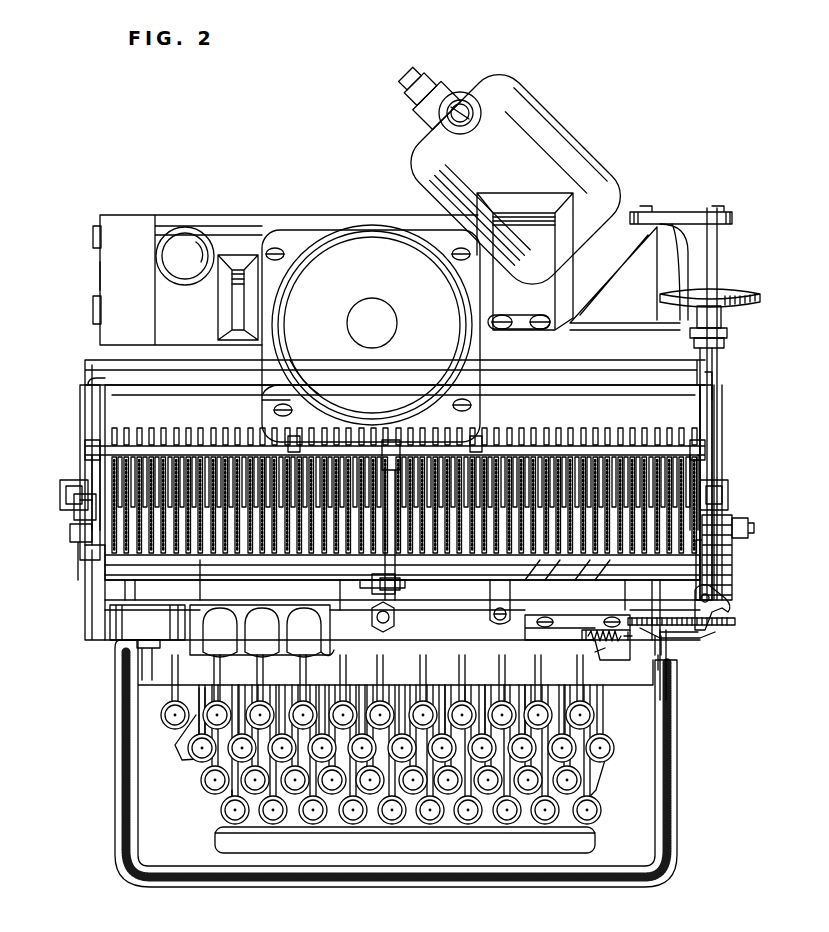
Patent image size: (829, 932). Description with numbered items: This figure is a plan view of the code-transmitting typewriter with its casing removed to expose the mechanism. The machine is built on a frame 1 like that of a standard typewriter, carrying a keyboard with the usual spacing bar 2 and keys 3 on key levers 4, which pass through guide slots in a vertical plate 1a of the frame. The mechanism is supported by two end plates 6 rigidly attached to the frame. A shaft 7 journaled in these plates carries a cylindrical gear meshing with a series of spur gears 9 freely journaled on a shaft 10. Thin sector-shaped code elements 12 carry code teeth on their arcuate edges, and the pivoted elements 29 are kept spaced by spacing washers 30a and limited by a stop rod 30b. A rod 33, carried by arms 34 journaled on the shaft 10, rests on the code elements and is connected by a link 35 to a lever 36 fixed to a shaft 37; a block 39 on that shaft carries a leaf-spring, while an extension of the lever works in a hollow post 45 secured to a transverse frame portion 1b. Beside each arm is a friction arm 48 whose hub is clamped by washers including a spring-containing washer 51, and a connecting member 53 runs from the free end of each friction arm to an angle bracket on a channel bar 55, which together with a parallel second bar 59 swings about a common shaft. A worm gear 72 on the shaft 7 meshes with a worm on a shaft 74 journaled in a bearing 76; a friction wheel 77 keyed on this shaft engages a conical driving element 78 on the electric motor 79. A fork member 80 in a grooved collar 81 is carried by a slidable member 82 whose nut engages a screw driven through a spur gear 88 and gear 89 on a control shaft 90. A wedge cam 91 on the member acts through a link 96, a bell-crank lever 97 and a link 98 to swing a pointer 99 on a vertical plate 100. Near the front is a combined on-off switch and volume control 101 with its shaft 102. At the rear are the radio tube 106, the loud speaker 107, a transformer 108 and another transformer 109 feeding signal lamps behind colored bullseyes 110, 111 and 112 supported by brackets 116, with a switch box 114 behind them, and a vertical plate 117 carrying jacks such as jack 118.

The frame 1 is at (122, 765).
The vertical plate 1a is at (636, 686).
The transversely extending portion of the frame 1b is at (462, 623).
The spacing bar 2 is at (592, 839).
The keys 3 is at (380, 816).
The key levers 4 is at (196, 772).
The end plates 6 is at (92, 600).
The shaft 7 is at (747, 524).
The spur gears 9 is at (200, 578).
The shaft 10 is at (82, 502).
The code elements 12 is at (314, 430).
The elements 29 is at (552, 580).
The spacing washers 30a is at (600, 580).
The stop rod 30b is at (167, 603).
The rod 33 is at (88, 443).
The arms 34 is at (86, 470).
The link 35 is at (396, 438).
The lever 36 is at (397, 588).
The shaft 37 is at (452, 590).
The block 39 is at (345, 592).
The hollow post 45 is at (372, 618).
The arm 48 is at (68, 484).
The washer 51 is at (74, 523).
The side plate 53 is at (82, 412).
The bar 55 is at (162, 366).
The second bar 59 is at (585, 349).
The worm gear 72 is at (733, 562).
The shaft 74 is at (718, 254).
The bearing 76 is at (670, 213).
The friction wheel 77 is at (740, 286).
The conical driving element 78 is at (620, 320).
The electric motor 79 is at (593, 150).
The fork member 80 is at (724, 328).
The grooved collar 81 is at (727, 337).
The member 82 is at (728, 350).
The spur gear 88 is at (738, 620).
The gear 89 is at (658, 606).
The shaft 90 is at (672, 658).
The wedge-shaped cam 91 is at (720, 368).
The link 96 is at (732, 460).
The bell-crank lever 97 is at (714, 628).
The link 98 is at (680, 642).
The pointer 99 is at (592, 652).
The vertical plate 100 is at (564, 650).
The combined on-off switch and volume control 101 is at (132, 638).
The shaft 102 is at (136, 670).
The radio tube 106 is at (186, 248).
The loud speaker 107 is at (387, 387).
The transformer 108 is at (237, 262).
The transformer 109 is at (517, 208).
The colored bullseye 110 is at (250, 652).
The colored bullseye 111 is at (290, 652).
The colored bullseye 112 is at (322, 650).
The switch box 114 is at (202, 642).
The brackets 116 is at (290, 614).
The vertical plate 117 is at (92, 262).
The jack 118 is at (92, 232).